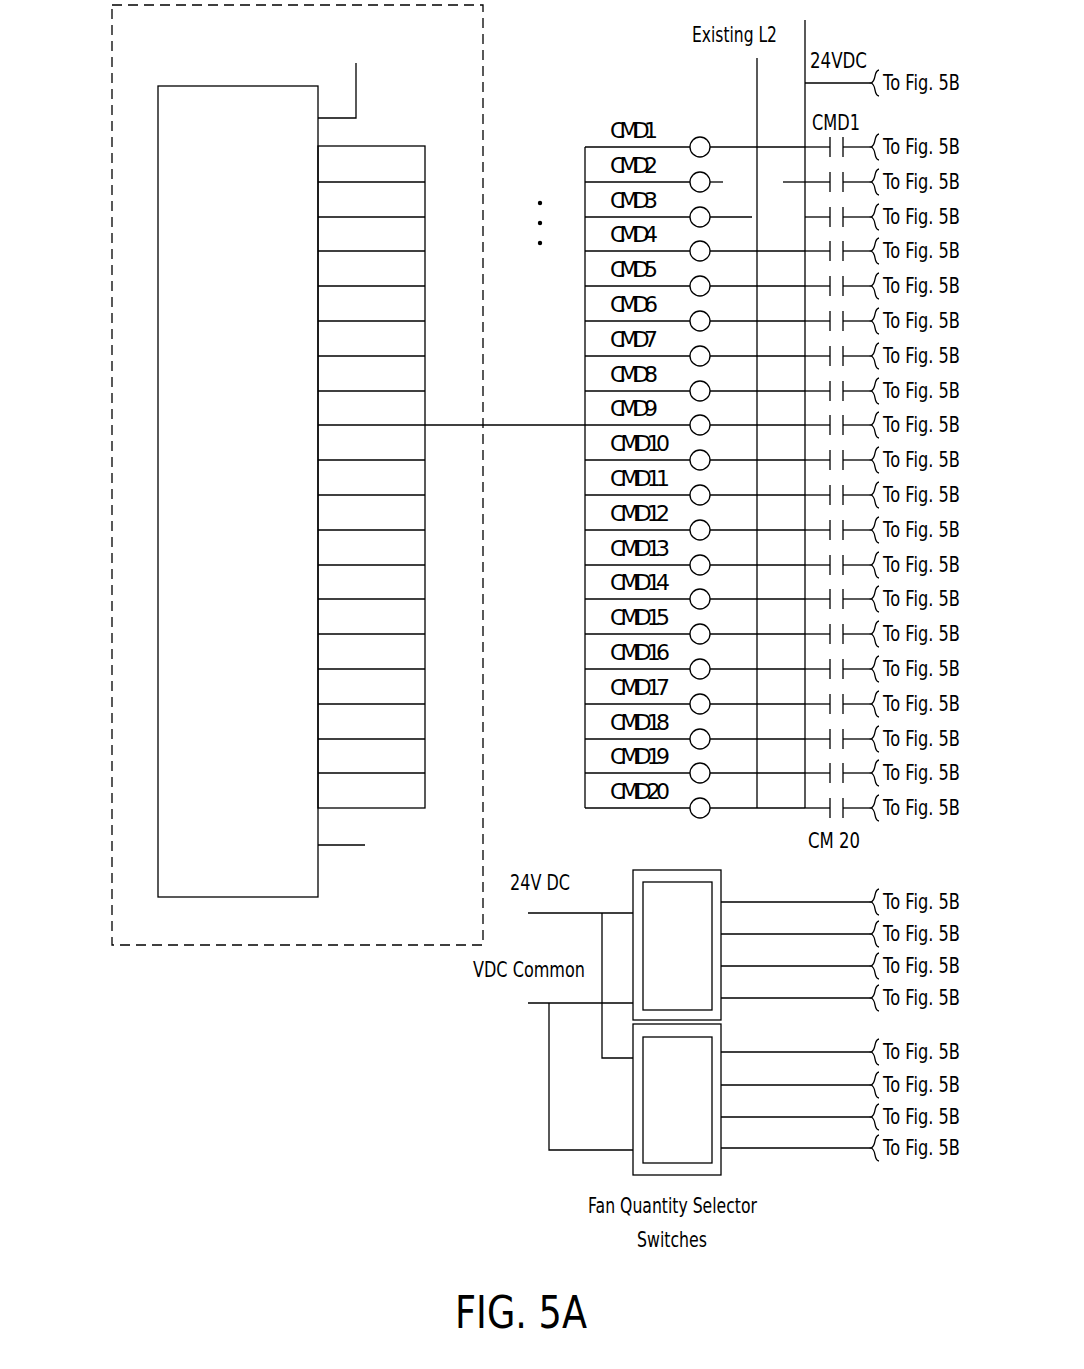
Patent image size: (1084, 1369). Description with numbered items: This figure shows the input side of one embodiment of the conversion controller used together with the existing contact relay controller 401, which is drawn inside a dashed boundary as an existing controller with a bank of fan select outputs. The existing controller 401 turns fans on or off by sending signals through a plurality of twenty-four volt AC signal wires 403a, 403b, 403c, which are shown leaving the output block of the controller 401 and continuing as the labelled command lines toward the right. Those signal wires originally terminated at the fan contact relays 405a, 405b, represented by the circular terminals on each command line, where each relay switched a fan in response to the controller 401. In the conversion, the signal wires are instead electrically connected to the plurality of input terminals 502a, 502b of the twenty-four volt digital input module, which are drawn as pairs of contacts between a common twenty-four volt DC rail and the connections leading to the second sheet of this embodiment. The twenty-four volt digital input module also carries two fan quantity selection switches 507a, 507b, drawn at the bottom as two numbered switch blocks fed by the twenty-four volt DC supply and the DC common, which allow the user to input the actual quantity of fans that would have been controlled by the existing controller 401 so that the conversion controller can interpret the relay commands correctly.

The existing contact relay controller 401 is at (207, 304).
The 24v AC signal wire 403a is at (398, 145).
The 24v AC signal wire 403b is at (425, 182).
The 24v AC signal wire 403c is at (425, 216).
The fan contact relay 405a is at (725, 147).
The fan contact relay 405b is at (727, 182).
The input terminal 502a is at (815, 149).
The input terminal 502b is at (825, 182).
The fan quantity selection switch 507a is at (696, 918).
The fan quantity selection switch 507b is at (660, 1083).